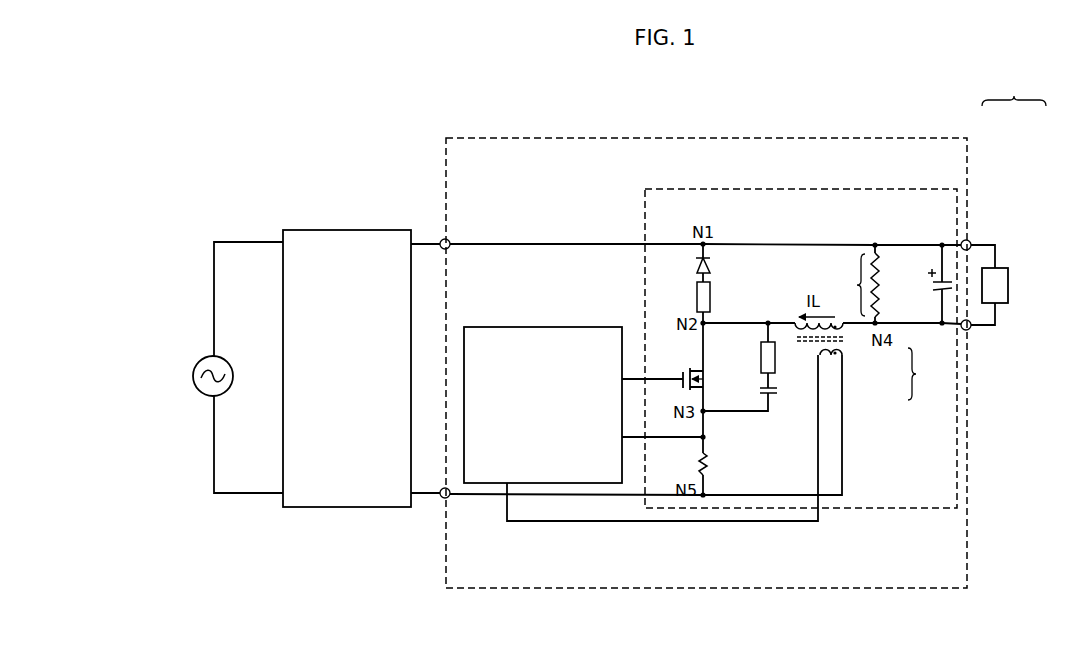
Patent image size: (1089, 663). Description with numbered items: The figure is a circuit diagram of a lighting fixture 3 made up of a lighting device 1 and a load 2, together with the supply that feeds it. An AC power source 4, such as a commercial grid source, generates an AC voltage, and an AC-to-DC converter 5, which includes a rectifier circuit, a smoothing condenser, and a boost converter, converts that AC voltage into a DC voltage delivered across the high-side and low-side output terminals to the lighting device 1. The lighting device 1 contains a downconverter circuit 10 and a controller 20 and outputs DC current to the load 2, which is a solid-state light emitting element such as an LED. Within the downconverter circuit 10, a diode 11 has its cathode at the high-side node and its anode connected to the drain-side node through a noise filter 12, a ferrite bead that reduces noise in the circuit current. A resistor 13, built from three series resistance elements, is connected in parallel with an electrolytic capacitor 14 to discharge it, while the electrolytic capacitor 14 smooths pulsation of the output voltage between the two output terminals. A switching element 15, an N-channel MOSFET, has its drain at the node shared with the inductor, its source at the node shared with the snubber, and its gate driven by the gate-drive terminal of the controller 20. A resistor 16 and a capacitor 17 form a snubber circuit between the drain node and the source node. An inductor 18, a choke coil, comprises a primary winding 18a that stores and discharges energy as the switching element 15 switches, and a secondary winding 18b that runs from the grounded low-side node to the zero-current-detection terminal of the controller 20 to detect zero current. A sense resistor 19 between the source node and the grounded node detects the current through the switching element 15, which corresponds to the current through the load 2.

The lighting device 1 is at (957, 138).
The load 2 is at (1006, 266).
The lighting fixture 3 is at (1014, 90).
The AC power source 4 is at (197, 359).
The AC-to-DC converter 5 is at (369, 228).
The downconverter circuit 10 is at (763, 189).
The diode 11 is at (718, 264).
The noise filter 12 is at (718, 294).
The resistor 13 is at (858, 285).
The electrolytic capacitor 14 is at (922, 286).
The switching element 15 is at (682, 369).
The resistor 16 is at (754, 358).
The capacitor 17 is at (754, 390).
The inductor 18 is at (866, 361).
The primary winding 18a is at (848, 331).
The secondary winding 18b is at (847, 356).
The resistor 19 is at (713, 463).
The controller 20 is at (573, 327).